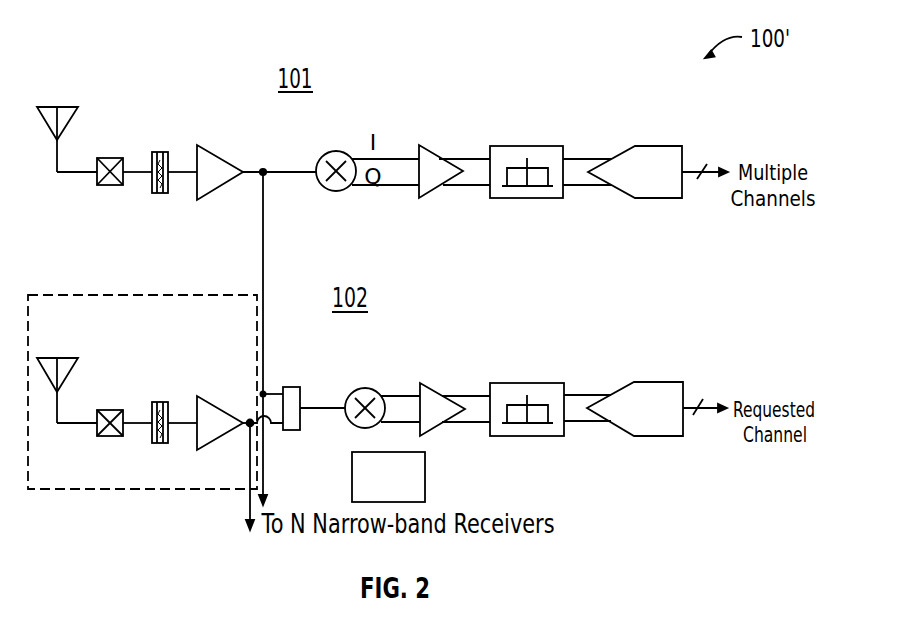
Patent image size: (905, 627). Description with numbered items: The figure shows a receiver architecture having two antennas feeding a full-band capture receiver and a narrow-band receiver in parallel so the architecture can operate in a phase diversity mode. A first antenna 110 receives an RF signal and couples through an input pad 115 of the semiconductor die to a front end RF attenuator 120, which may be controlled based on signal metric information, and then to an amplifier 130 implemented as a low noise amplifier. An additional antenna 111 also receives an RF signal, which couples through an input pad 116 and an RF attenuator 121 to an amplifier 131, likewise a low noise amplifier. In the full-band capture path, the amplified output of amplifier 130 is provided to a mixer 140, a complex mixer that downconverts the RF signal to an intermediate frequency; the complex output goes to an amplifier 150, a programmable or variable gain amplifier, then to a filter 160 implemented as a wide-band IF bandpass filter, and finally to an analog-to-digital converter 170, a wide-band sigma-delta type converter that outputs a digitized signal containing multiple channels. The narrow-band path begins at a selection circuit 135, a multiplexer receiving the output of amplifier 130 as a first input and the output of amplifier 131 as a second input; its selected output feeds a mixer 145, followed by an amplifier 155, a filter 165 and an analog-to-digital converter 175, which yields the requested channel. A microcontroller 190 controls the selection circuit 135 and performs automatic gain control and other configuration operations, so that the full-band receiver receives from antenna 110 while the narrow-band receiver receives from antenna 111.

The antenna 110 is at (57, 107).
The additional antenna 111 is at (57, 358).
The input pad 115 is at (110, 158).
The input pad 116 is at (110, 410).
The front end RF attenuator 120 is at (160, 152).
The RF attenuator 121 is at (160, 402).
The amplifier 130 is at (221, 152).
The amplifier 131 is at (222, 402).
The selection circuit 135 is at (291, 387).
The mixer 140 is at (336, 151).
The mixer 145 is at (365, 388).
The amplifier 150 is at (437, 152).
The amplifier 155 is at (436, 388).
The filter 160 is at (527, 146).
The filter 165 is at (530, 383).
The analog-to-digital converter 170 is at (658, 146).
The analog-to-digital converter 175 is at (658, 382).
The microcontroller 190 is at (425, 474).